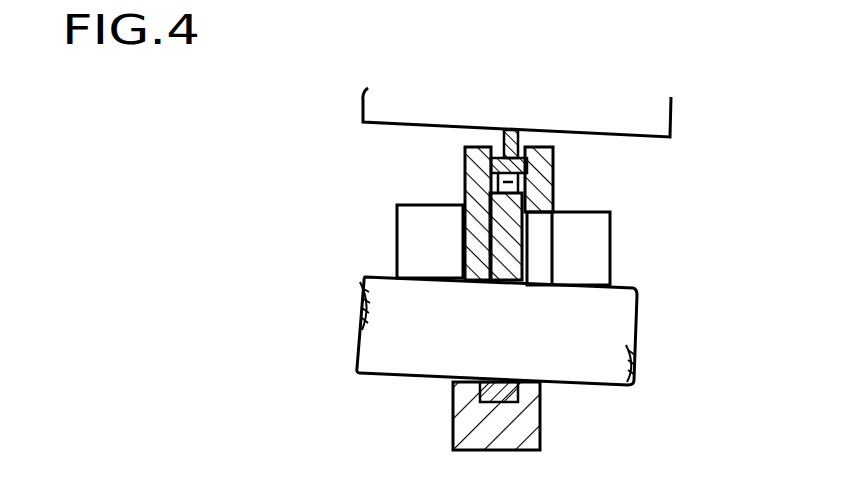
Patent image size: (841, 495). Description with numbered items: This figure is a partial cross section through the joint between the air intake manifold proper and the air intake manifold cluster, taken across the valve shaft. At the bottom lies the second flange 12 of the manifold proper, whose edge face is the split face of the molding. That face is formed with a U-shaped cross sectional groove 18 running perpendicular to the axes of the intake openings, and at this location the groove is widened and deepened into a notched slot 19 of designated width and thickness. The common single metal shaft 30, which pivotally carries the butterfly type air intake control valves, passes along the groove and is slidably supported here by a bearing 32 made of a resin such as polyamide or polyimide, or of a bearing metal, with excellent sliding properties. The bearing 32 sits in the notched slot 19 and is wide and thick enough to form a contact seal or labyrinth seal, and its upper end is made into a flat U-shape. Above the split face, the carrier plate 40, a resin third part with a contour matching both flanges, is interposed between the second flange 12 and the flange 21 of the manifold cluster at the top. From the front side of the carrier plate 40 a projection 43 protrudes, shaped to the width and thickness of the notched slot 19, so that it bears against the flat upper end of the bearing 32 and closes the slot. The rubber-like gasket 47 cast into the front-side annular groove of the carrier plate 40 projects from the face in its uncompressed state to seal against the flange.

The second flange 12 is at (527, 432).
The U-shaped cross sectional groove 18 is at (478, 257).
The notched slot 19 is at (487, 217).
The flange 21 is at (660, 116).
The shaft 30 is at (610, 335).
The bearing 32 is at (600, 267).
The carrier plate 40 is at (548, 177).
The projection 43 is at (525, 233).
The gasket 47 is at (518, 130).